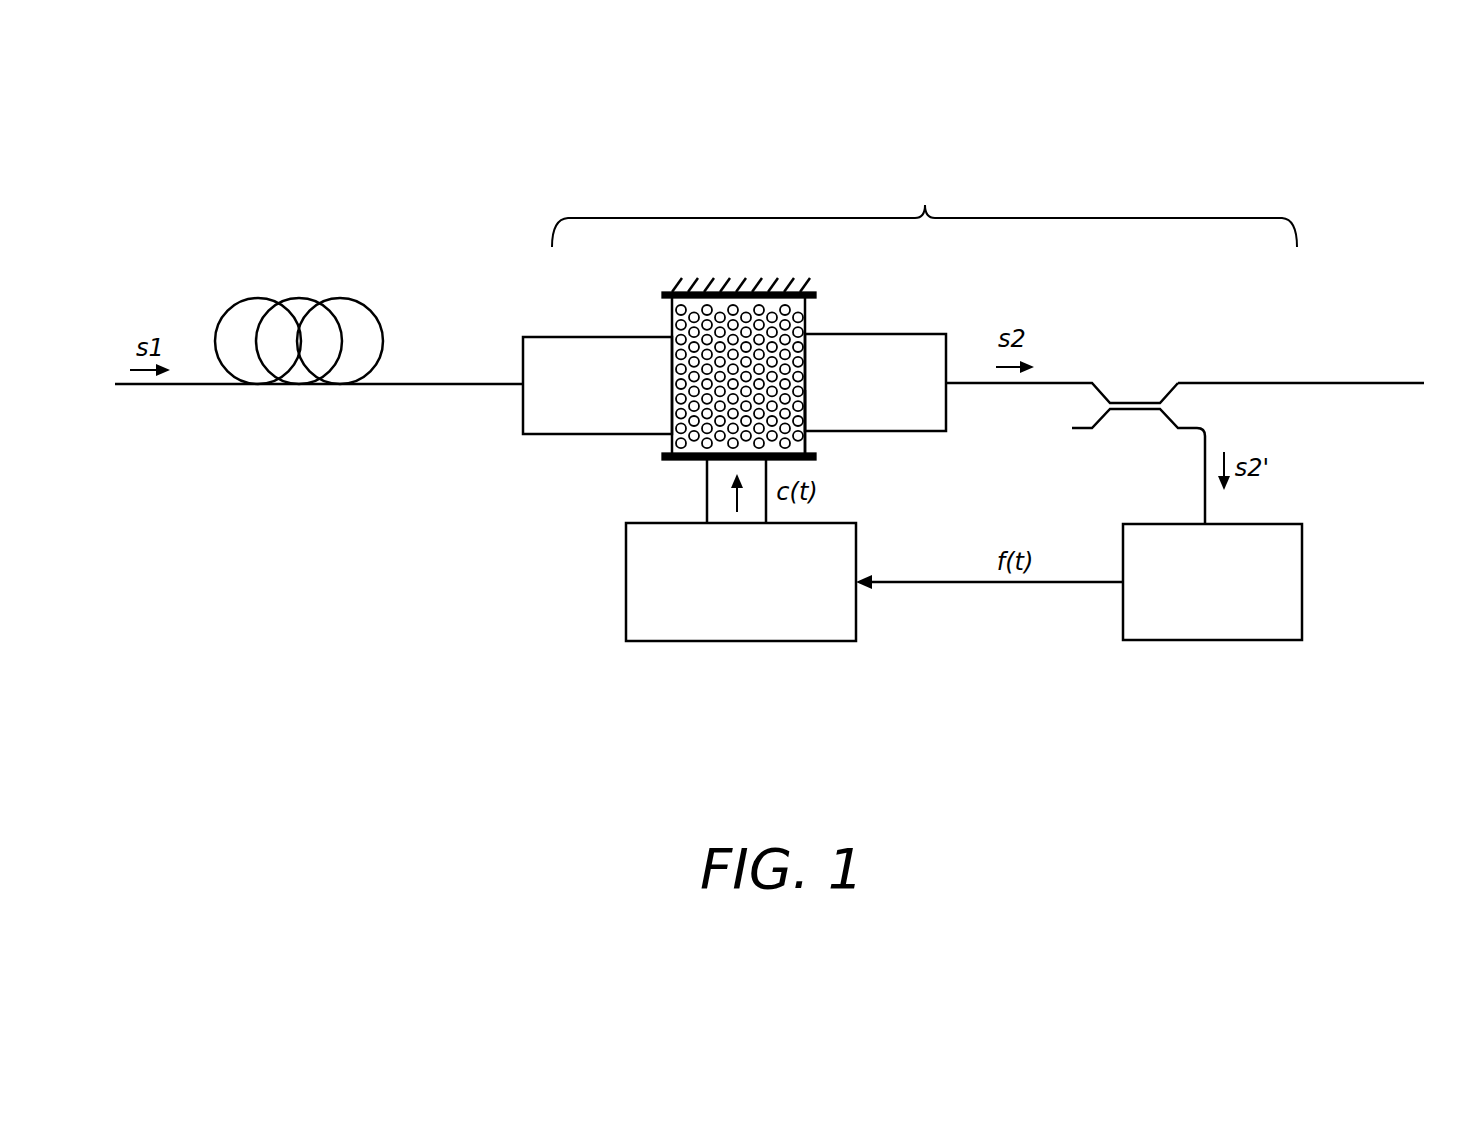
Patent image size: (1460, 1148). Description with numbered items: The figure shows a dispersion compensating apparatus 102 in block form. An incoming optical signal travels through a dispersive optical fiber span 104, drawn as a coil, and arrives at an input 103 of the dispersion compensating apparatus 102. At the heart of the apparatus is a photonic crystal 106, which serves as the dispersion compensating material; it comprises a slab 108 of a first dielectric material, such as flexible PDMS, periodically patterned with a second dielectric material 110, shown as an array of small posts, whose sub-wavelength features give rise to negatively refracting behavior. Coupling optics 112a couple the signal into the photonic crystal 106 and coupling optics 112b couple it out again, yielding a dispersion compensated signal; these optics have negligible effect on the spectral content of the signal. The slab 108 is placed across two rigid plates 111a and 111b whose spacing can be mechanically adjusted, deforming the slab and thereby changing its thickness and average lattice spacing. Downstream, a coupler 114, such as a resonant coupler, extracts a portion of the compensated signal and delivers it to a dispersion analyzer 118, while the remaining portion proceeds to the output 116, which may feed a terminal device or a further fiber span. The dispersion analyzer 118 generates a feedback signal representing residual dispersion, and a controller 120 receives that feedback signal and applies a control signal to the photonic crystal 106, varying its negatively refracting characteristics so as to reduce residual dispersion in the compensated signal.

The dispersion compensating apparatus 102 is at (924, 206).
The input 103 is at (438, 372).
The optical fiber span 104 is at (301, 292).
The photonic crystal 106 is at (741, 381).
The slab 108 is at (806, 446).
The second dielectric material 110 is at (806, 306).
The rigid plate 111a is at (816, 459).
The rigid plate 111b is at (816, 295).
The coupling optics 112a is at (568, 434).
The coupling optics 112b is at (930, 431).
The coupler 114 is at (1138, 421).
The output 116 is at (1398, 375).
The dispersion analyzer 118 is at (1302, 580).
The controller 120 is at (736, 641).